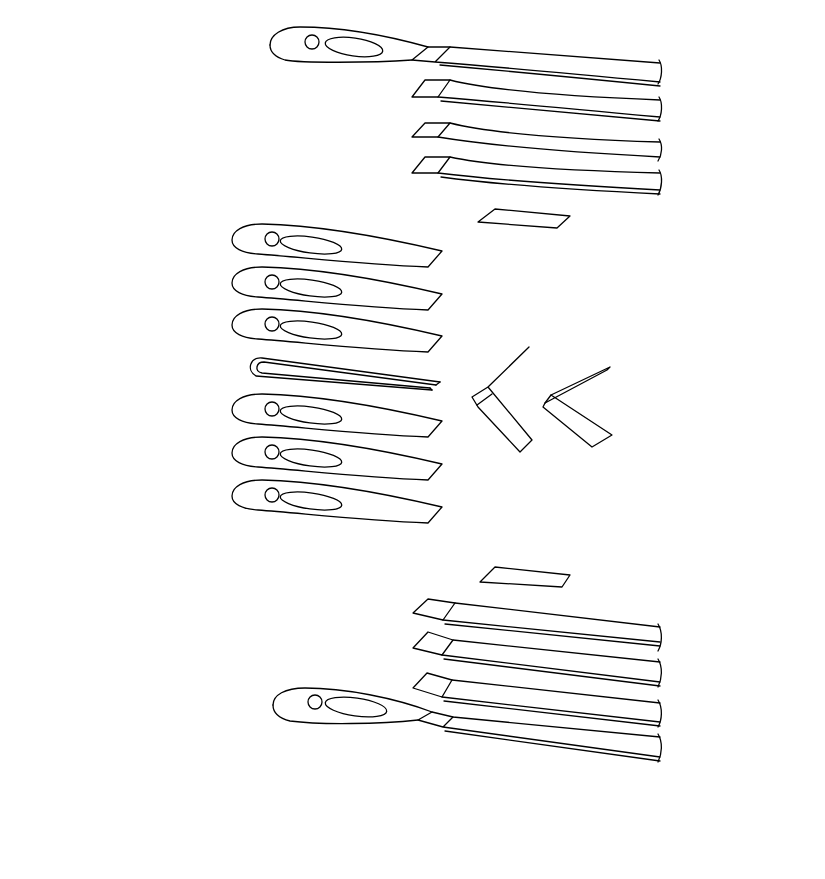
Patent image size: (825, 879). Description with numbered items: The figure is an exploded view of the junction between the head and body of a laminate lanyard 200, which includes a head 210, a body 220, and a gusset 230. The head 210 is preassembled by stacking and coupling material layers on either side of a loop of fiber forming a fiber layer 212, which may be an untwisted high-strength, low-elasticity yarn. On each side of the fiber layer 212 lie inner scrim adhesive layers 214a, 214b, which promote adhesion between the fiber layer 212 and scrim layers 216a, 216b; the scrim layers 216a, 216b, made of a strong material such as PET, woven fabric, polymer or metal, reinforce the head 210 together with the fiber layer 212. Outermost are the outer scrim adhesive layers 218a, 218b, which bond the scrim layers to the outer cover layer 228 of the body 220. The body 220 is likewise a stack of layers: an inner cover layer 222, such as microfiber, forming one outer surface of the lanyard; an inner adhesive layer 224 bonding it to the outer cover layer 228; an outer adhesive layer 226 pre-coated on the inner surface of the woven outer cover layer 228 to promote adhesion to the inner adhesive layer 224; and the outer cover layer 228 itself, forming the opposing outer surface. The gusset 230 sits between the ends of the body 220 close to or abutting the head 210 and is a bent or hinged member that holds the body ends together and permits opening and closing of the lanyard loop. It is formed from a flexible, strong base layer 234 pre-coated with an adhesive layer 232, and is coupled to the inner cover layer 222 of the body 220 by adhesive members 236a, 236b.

The laminate lanyard 200 is at (150, 103).
The head 210 is at (200, 190).
The fiber layer 212 is at (250, 370).
The inner scrim adhesive layer 214a is at (232, 323).
The inner scrim adhesive layer 214b is at (232, 408).
The scrim layer 216a is at (232, 281).
The scrim layer 216b is at (232, 451).
The outer scrim adhesive layer 218a is at (232, 238).
The outer scrim adhesive layer 218b is at (232, 494).
The body 220 is at (338, 106).
The inner cover layer 222 is at (662, 188).
The inner adhesive layer 224 is at (662, 154).
The outer adhesive layer 226 is at (662, 115).
The outer cover layer 228 is at (662, 73).
The gusset 230 is at (590, 327).
The adhesive layer 232 is at (522, 443).
The base layer 234 is at (613, 432).
The adhesive member 236a is at (557, 228).
The adhesive member 236b is at (563, 586).